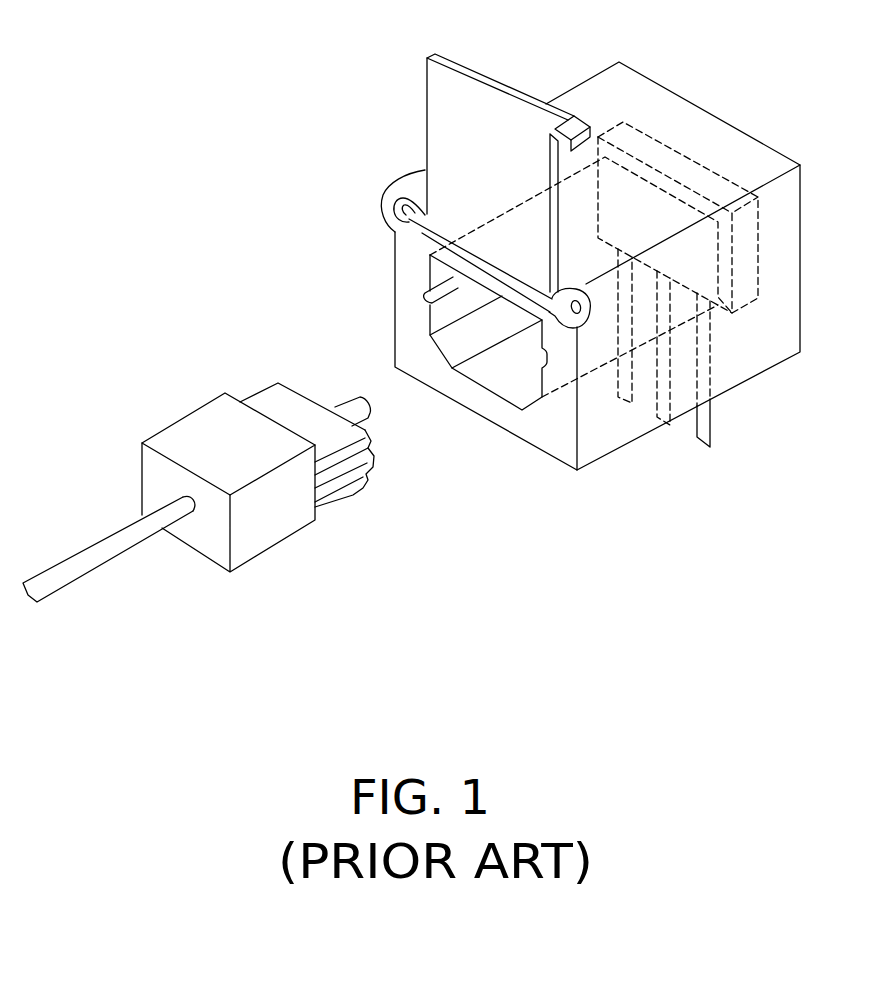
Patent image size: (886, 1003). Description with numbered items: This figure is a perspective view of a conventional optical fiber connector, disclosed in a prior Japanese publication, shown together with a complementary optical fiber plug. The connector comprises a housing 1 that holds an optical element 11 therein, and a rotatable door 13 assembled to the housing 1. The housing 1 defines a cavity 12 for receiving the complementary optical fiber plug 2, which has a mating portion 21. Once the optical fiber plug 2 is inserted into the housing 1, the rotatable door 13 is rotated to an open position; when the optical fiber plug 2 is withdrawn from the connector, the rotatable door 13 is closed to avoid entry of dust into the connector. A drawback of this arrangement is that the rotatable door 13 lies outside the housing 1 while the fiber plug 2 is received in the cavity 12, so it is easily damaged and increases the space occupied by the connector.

The housing 1 is at (600, 90).
The optical element 11 is at (705, 183).
The cavity 12 is at (497, 377).
The rotatable door 13 is at (457, 88).
The optical fiber plug 2 is at (195, 437).
The mating portion 21 is at (347, 398).